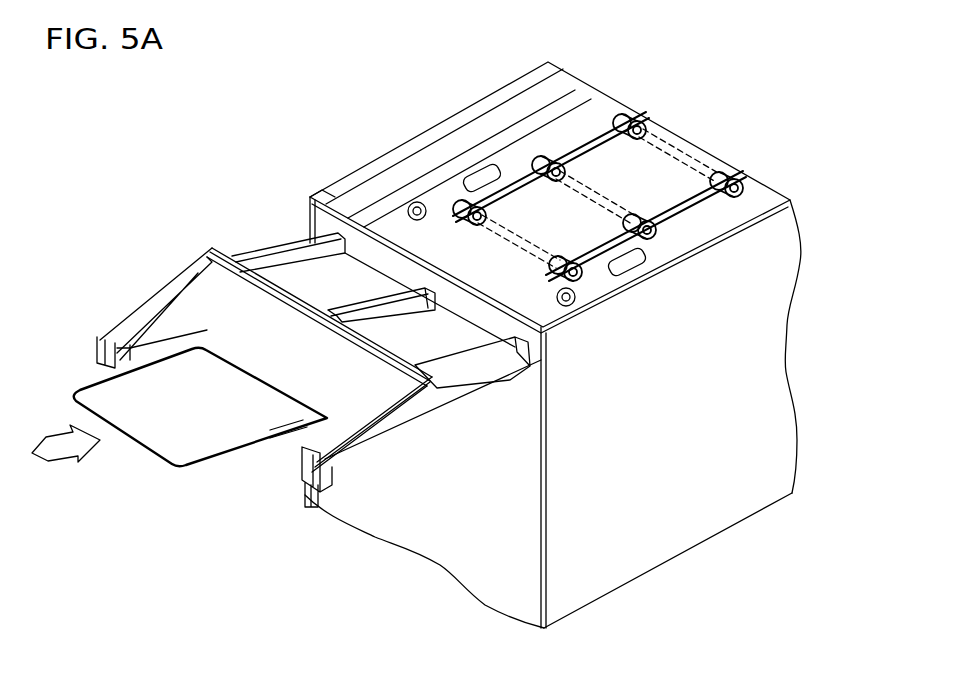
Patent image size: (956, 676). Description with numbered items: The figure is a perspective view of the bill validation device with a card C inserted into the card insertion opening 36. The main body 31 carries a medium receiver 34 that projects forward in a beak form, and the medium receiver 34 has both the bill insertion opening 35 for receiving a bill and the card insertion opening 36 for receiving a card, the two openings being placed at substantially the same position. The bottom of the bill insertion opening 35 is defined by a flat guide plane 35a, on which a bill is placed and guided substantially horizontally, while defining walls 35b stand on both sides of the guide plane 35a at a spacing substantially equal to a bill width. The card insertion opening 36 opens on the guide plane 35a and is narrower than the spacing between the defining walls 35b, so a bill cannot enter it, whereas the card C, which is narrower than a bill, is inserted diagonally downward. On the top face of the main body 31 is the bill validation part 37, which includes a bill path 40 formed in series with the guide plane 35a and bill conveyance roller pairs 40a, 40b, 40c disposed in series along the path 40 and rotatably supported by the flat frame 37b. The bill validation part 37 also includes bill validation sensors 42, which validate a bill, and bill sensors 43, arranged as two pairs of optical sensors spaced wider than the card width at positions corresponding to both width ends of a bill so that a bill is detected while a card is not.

The main body 31 is at (770, 437).
The medium receiver 34 is at (279, 381).
The bill insertion opening 35 is at (205, 272).
The guide plane 35a is at (337, 387).
The defining walls 35b is at (97, 352).
The card insertion opening 36 is at (182, 353).
The bill validation part 37 is at (613, 105).
The flat frame 37b is at (443, 197).
The bill path 40 is at (667, 160).
The bill conveyance roller pair 40a is at (555, 260).
The bill conveyance roller pair 40b is at (560, 258).
The bill conveyance roller pair 40c is at (720, 176).
The bill validation sensors 42 is at (473, 172).
The bill sensors 43 is at (410, 209).
The card C is at (160, 440).